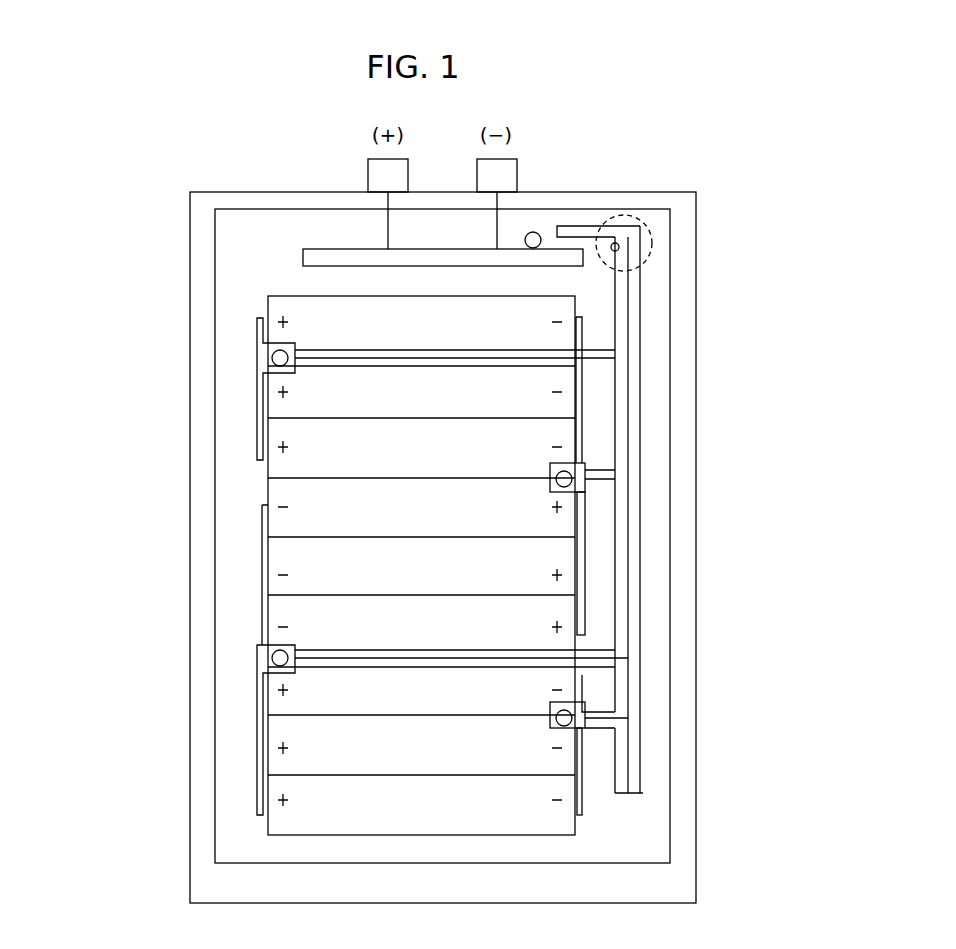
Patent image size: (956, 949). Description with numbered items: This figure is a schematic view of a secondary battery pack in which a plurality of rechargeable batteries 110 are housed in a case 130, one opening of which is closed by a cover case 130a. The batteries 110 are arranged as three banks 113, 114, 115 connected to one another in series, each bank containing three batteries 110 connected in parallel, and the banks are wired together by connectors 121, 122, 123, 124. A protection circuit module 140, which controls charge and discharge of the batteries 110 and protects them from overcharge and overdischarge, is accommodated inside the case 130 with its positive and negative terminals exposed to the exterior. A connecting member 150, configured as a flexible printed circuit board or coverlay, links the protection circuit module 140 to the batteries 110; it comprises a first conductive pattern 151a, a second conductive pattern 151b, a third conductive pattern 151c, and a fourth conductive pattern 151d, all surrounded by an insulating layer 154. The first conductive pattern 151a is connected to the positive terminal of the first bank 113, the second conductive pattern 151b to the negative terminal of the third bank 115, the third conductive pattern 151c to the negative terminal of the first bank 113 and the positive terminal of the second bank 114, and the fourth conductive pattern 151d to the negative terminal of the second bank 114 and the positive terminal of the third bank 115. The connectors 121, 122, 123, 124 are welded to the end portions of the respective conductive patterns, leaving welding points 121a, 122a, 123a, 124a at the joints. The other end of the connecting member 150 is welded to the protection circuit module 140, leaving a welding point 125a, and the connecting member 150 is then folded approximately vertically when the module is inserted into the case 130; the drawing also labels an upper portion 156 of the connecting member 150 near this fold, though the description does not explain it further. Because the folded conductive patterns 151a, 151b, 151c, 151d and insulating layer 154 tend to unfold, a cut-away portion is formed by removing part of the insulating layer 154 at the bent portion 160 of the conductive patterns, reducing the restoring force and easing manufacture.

The rechargeable battery 110 is at (287, 295).
The first bank 113 is at (149, 414).
The second bank 114 is at (149, 548).
The third bank 115 is at (149, 788).
The connector 121 is at (258, 355).
The welding point 121a is at (276, 362).
The connector 122 is at (585, 802).
The welding point 122a is at (560, 727).
The connector 123 is at (587, 583).
The welding point 123a is at (570, 462).
The connector 124 is at (257, 746).
The welding point 124a is at (276, 665).
The welding point 125a is at (433, 255).
The case 130 is at (696, 888).
The cover case 130a is at (250, 200).
The protection circuit module 140 is at (538, 232).
The connecting member 150 is at (657, 320).
The first conductive pattern 151a is at (623, 353).
The second conductive pattern 151b is at (600, 722).
The third conductive pattern 151c is at (590, 488).
The fourth conductive pattern 151d is at (600, 660).
The insulating layer 154 is at (641, 411).
The connection portion 156 is at (652, 242).
The bent portion 160 is at (650, 258).